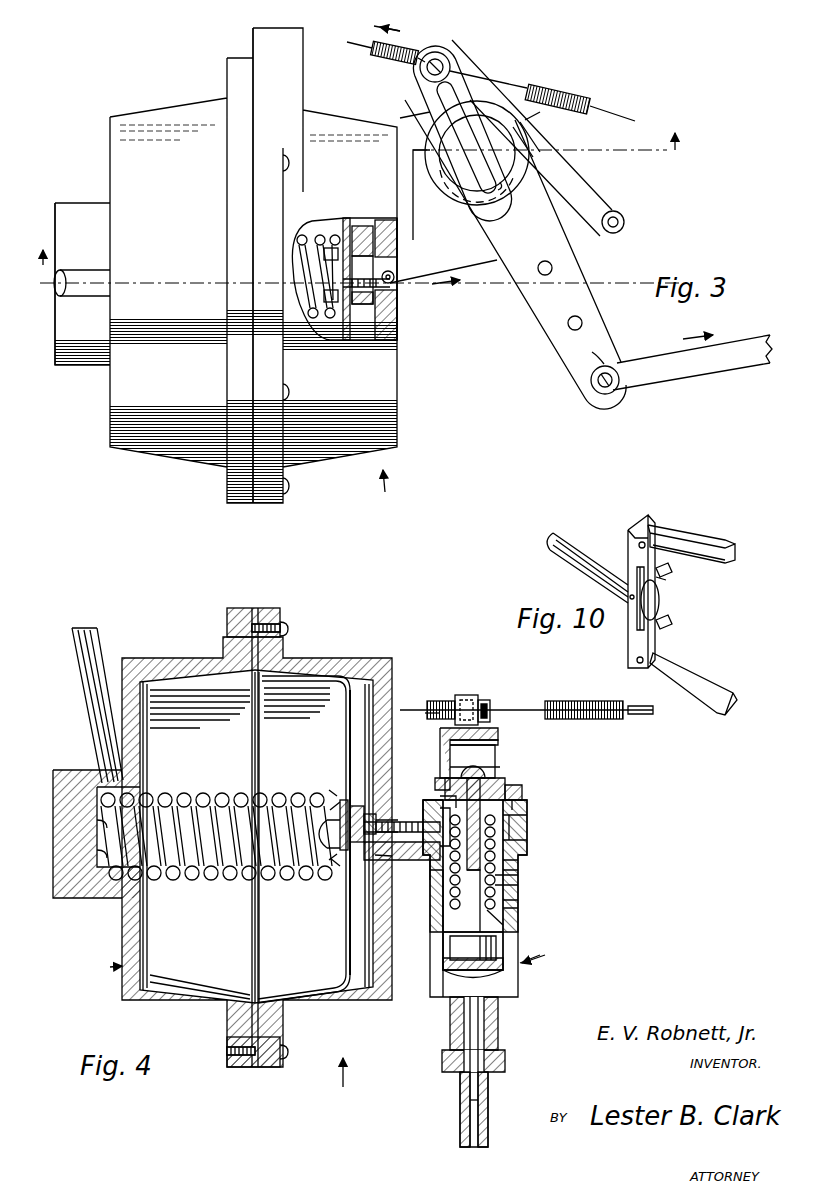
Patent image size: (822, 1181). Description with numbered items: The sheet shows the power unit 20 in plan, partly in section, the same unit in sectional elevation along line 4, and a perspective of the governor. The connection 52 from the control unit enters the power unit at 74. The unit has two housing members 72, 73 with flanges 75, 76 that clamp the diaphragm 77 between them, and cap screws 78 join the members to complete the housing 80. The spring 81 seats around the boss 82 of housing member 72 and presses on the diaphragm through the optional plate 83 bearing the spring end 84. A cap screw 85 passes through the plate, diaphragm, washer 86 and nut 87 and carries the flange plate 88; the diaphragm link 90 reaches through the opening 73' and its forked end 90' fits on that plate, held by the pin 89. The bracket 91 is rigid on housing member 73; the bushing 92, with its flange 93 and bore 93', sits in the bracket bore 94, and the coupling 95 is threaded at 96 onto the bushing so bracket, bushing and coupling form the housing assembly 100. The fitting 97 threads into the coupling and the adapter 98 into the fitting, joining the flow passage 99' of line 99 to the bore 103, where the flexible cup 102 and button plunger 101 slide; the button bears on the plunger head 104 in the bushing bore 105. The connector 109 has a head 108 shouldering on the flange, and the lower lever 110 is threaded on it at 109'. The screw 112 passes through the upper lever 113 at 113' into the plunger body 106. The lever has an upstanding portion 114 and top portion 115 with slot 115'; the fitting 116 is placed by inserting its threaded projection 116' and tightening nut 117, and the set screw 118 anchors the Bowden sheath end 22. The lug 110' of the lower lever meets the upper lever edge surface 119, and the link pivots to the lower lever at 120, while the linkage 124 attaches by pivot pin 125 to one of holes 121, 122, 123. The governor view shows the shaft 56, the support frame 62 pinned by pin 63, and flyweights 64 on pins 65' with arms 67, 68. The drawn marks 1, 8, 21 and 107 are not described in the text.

In FIG. 3, the stray mark 1 is at (502, 311).
In FIG. 3, the section line 4- 4 is at (357, 183).
In FIG. 4, the rod end 8 is at (542, 710).
In FIG. 3, the power unit 20 is at (201, 100).
In FIG. 4, the power unit 20 is at (328, 1080).
In FIG. 3, the tension spring rod 21 is at (530, 85).
In FIG. 4, the tension spring rod 21 is at (556, 702).
In FIG. 3, the Bowden sheath end 22 is at (406, 46).
In FIG. 4, the Bowden sheath end 22 is at (447, 699).
In FIG. 3, the connection 52 is at (64, 266).
In FIG. 4, the connection 52 is at (88, 746).
In FIG. 10, the shaft 56 is at (660, 608).
In FIG. 10, the governor support frame 62 is at (630, 665).
In FIG. 10, the pin 63 is at (636, 605).
In FIG. 10, the governor flyweights 64 is at (680, 530).
In FIG. 10, the pins 65' is at (618, 595).
In FIG. 10, the flyweight arms 67 is at (728, 546).
In FIG. 10, the flyweight arms 68 is at (668, 570).
In FIG. 3, the housing member 72 is at (167, 232).
In FIG. 4, the housing member 72 is at (122, 995).
In FIG. 3, the housing member 73 is at (340, 305).
In FIG. 4, the housing member 73 is at (378, 858).
In FIG. 3, the opening 73' is at (409, 283).
In FIG. 4, the opening 73' is at (416, 882).
In FIG. 3, the connection point 74 is at (112, 272).
In FIG. 4, the connection point 74 is at (96, 783).
In FIG. 3, the flange 75 is at (242, 506).
In FIG. 4, the flange 75 is at (226, 610).
In FIG. 3, the flange 76 is at (270, 504).
In FIG. 4, the flange 76 is at (278, 607).
In FIG. 3, the diaphragm 77 is at (346, 330).
In FIG. 4, the diaphragm 77 is at (347, 760).
In FIG. 3, the cap screws 78 is at (289, 485).
In FIG. 4, the cap screws 78 is at (290, 629).
In FIG. 3, the housing 80 is at (382, 484).
In FIG. 4, the housing 80 is at (200, 638).
In FIG. 3, the spring 81 is at (320, 218).
In FIG. 4, the spring 81 is at (155, 882).
In FIG. 4, the boss 82 is at (104, 849).
In FIG. 3, the plate 83 is at (354, 218).
In FIG. 4, the plate 83 is at (348, 907).
In FIG. 3, the spring end 84 is at (344, 218).
In FIG. 4, the spring end 84 is at (342, 800).
In FIG. 3, the cap screw 85 is at (329, 245).
In FIG. 4, the cap screw 85 is at (328, 866).
In FIG. 3, the washer 86 is at (358, 306).
In FIG. 4, the washer 86 is at (360, 850).
In FIG. 3, the nut 87 is at (369, 251).
In FIG. 4, the nut 87 is at (360, 805).
In FIG. 3, the flange plate 88 is at (386, 288).
In FIG. 4, the flange plate 88 is at (423, 862).
In FIG. 3, the pin 89 is at (396, 271).
In FIG. 4, the pin 89 is at (393, 826).
In FIG. 3, the diaphragm link 90 is at (444, 273).
In FIG. 4, the diaphragm link 90 is at (402, 796).
In FIG. 3, the forked end 90' is at (446, 294).
In FIG. 4, the forked end 90' is at (399, 863).
In FIG. 3, the bracket 91 is at (388, 110).
In FIG. 4, the bracket 91 is at (527, 820).
In FIG. 4, the bushing 92 is at (510, 845).
In FIG. 4, the flange 93 is at (486, 855).
In FIG. 4, the bore 93' is at (421, 794).
In FIG. 4, the bore 94 is at (528, 836).
In FIG. 4, the coupling 95 is at (505, 935).
In FIG. 4, the threads 96 is at (520, 904).
In FIG. 4, the fitting 97 is at (494, 1004).
In FIG. 4, the adapter 98 is at (508, 1062).
In FIG. 4, the line 99 is at (492, 1072).
In FIG. 4, the flow passage 99' is at (451, 1101).
In FIG. 4, the housing assembly 100 is at (556, 954).
In FIG. 4, the button plunger 101 is at (448, 962).
In FIG. 4, the flexible cup 102 is at (450, 972).
In FIG. 4, the bore 103 is at (448, 942).
In FIG. 4, the plunger head 104 is at (488, 924).
In FIG. 4, the bore 105 is at (498, 882).
In FIG. 4, the plunger body 106 is at (440, 906).
In FIG. 4, the shoulder 107 is at (503, 866).
In FIG. 4, the head 108 is at (518, 786).
In FIG. 4, the connector 109 is at (492, 770).
In FIG. 4, the threaded connection 109' is at (424, 763).
In FIG. 3, the lower lever 110 is at (516, 224).
In FIG. 4, the lower lever 110 is at (501, 864).
In FIG. 3, the lug 110' is at (558, 124).
In FIG. 4, the lug 110' is at (560, 775).
In FIG. 3, the screw 112 is at (474, 142).
In FIG. 4, the screw 112 is at (490, 770).
In FIG. 3, the upper lever 113 is at (563, 294).
In FIG. 4, the upper lever 113 is at (477, 756).
In FIG. 4, the screw passage 113' is at (414, 702).
In FIG. 3, the upstanding portion 114 is at (432, 150).
In FIG. 4, the upstanding portion 114 is at (440, 730).
In FIG. 3, the top portion 115 is at (494, 183).
In FIG. 4, the top portion 115 is at (526, 684).
In FIG. 3, the slot 115' is at (517, 190).
In FIG. 4, the slot 115' is at (490, 729).
In FIG. 3, the fitting 116 is at (450, 50).
In FIG. 4, the fitting 116 is at (507, 685).
In FIG. 4, the threaded projection 116' is at (512, 692).
In FIG. 4, the nut 117 is at (474, 755).
In FIG. 3, the set screw 118 is at (445, 62).
In FIG. 4, the set screw 118 is at (474, 694).
In FIG. 3, the upper lever edge surface 119 is at (535, 147).
In FIG. 3, the pivot connection 120 is at (614, 234).
In FIG. 3, the hole 121 is at (541, 274).
In FIG. 3, the hole 122 is at (569, 324).
In FIG. 3, the hole 123 is at (589, 352).
In FIG. 3, the linkage 124 is at (644, 356).
In FIG. 3, the pivot pin 125 is at (606, 394).